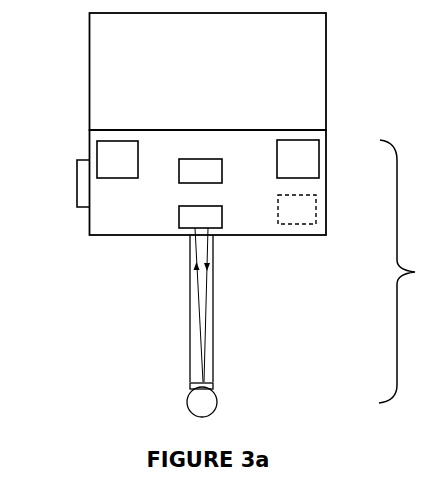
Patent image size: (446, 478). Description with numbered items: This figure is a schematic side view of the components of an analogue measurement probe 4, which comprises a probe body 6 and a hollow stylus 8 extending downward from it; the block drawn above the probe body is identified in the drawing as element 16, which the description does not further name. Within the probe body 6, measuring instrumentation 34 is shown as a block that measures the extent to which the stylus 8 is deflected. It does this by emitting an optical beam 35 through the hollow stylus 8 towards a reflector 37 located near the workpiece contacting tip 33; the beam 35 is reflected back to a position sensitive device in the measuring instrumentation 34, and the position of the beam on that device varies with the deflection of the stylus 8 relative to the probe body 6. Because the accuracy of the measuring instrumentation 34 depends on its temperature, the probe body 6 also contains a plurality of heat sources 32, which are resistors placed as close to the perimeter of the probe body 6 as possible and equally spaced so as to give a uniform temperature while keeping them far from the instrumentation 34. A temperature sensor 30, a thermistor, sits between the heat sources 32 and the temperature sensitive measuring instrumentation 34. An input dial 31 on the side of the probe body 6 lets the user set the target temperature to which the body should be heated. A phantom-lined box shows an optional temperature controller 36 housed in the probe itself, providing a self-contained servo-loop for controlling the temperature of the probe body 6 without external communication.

The upper housing / main unit 16 is at (329, 78).
The probe body 6 is at (329, 178).
The input dial 31 is at (76, 170).
The heat sources 32 is at (208, 159).
The temperature sensor 30 is at (200, 171).
The measuring instrumentation 34 is at (200, 217).
The temperature controller 36 is at (297, 209).
The stylus 8 is at (160, 328).
The optical beam 35 is at (205, 293).
The reflector 37 is at (210, 378).
The workpiece contacting tip 33 is at (181, 398).
The measurement probe 4 is at (405, 271).